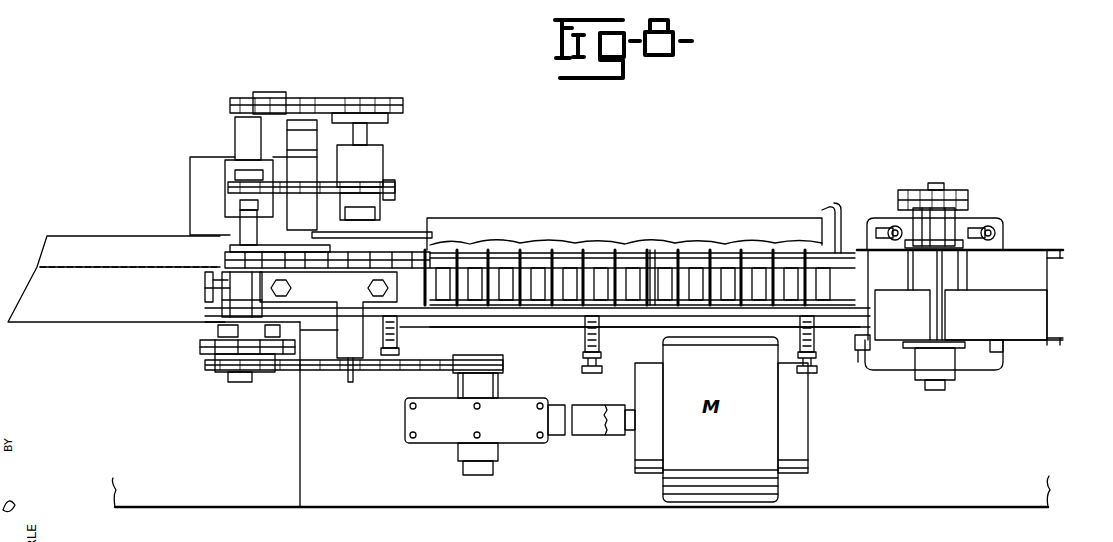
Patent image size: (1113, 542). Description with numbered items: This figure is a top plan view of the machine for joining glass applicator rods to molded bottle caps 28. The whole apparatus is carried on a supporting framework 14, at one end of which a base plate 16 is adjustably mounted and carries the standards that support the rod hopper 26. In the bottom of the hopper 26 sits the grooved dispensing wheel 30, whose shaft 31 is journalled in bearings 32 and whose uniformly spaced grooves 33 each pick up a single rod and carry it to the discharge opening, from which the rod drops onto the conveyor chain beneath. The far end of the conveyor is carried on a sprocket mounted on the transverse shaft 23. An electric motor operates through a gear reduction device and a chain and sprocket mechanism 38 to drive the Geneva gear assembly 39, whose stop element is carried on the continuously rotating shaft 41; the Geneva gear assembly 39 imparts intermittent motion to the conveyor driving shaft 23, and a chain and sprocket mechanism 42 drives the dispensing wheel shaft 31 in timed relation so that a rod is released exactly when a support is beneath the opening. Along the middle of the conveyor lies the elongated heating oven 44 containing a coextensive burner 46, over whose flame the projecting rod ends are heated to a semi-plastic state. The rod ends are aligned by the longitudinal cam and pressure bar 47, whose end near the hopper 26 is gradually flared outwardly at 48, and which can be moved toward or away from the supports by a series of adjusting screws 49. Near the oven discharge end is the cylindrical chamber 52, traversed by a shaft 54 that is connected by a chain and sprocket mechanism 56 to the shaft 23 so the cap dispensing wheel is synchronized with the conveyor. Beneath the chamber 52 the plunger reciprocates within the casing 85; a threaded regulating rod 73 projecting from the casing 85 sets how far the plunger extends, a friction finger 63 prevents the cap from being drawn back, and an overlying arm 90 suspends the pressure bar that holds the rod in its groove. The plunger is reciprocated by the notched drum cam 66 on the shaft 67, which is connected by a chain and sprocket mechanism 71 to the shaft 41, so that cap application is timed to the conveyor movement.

The supporting framework 14 is at (520, 424).
The base plate 16 is at (982, 217).
The transverse shaft 23 is at (242, 226).
The dispensing container or hopper 26 is at (1052, 312).
The molded bottle caps 28 is at (226, 261).
The dispensing wheel 30 is at (936, 275).
The shaft 31 is at (942, 182).
The bearings 32 is at (925, 224).
The grooves 33 is at (967, 270).
The chain and sprocket mechanism 38 is at (395, 371).
The Geneva gear assembly 39 is at (210, 356).
The shaft 41 is at (235, 176).
The chain and sprocket mechanism 42 is at (962, 189).
The heating oven 44 is at (744, 222).
The elongated burner 46 is at (834, 212).
The cam and pressure bar 47 is at (658, 316).
The flared end 48 is at (880, 310).
The adjusting screws 49 is at (398, 344).
The cylindrical chamber 52 is at (412, 232).
The shaft 54 is at (380, 172).
The chain and sprocket mechanism 56 is at (322, 194).
The friction finger 63 is at (312, 245).
The notched drum cam 66 is at (396, 194).
The shaft 67 is at (358, 95).
The chain and sprocket mechanism 71 is at (329, 95).
The threaded regulating rod 73 is at (353, 142).
The cylinder or casing 85 is at (393, 176).
The overlying arm 90 is at (340, 338).